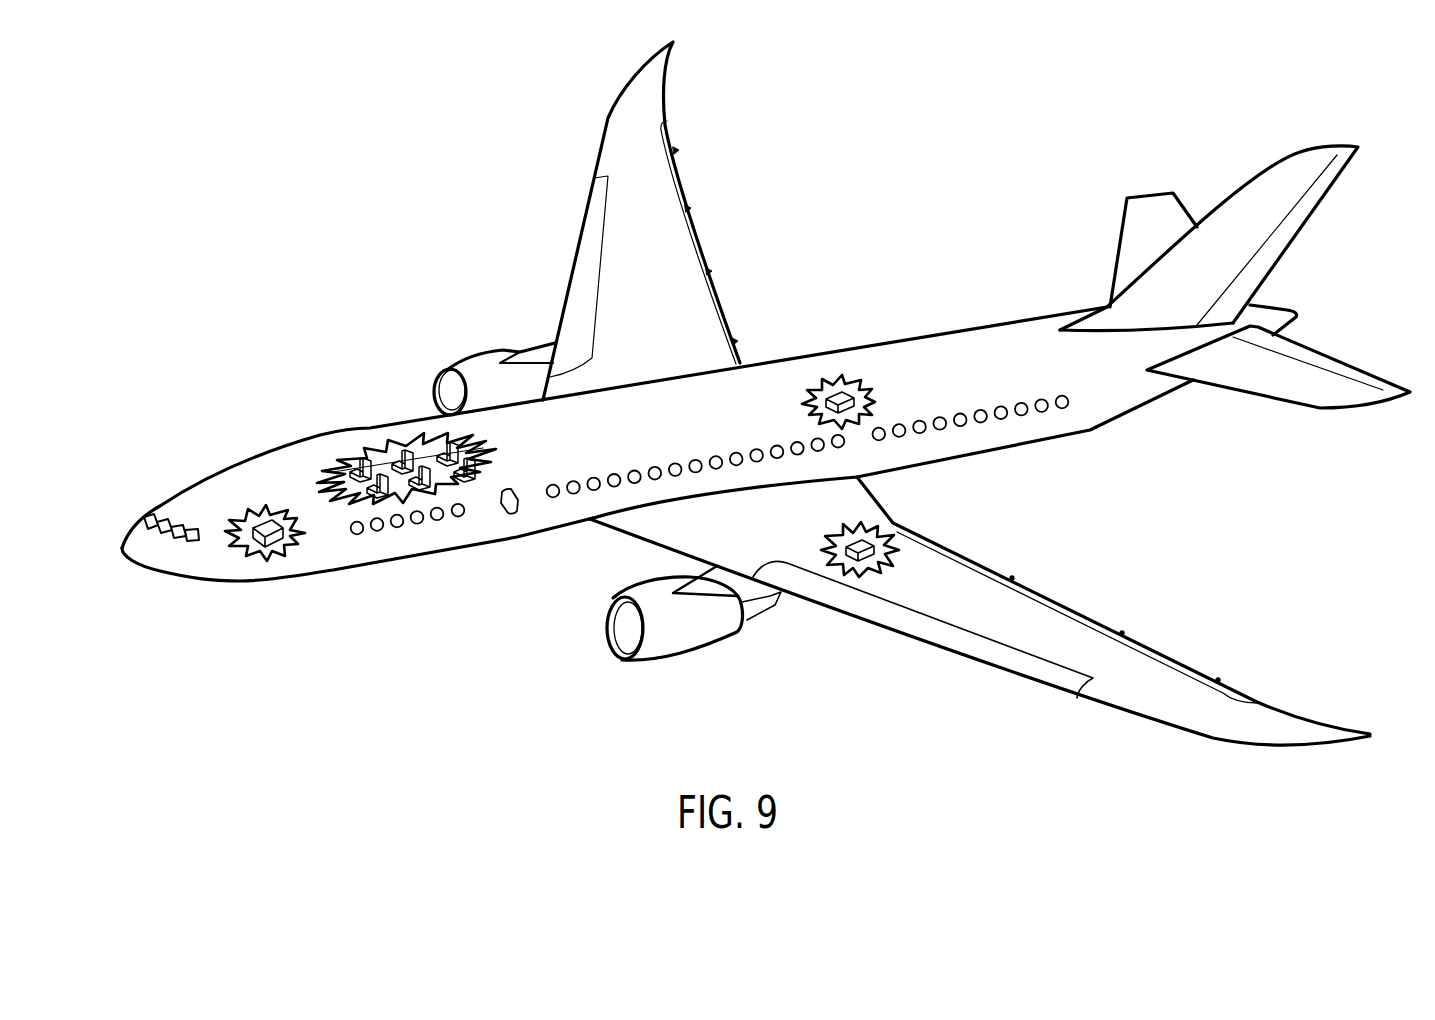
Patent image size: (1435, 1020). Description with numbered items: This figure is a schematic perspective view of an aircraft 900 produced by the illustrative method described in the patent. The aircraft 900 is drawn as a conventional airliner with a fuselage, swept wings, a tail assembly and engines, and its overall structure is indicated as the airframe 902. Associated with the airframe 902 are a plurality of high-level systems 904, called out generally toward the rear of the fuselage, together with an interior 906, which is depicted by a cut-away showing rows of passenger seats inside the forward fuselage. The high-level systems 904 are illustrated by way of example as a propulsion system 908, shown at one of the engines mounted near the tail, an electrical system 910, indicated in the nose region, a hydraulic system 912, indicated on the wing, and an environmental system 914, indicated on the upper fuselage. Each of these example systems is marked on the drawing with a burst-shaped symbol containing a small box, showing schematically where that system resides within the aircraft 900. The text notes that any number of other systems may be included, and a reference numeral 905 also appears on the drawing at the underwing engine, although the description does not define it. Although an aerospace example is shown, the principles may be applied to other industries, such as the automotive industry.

The aircraft 900 is at (290, 182).
The airframe 902 is at (393, 414).
The high-level systems 904 is at (963, 299).
The engine 905 is at (690, 634).
The interior 906 is at (357, 452).
The propulsion system 908 is at (475, 363).
The electrical system 910 is at (264, 507).
The hydraulic system 912 is at (870, 540).
The environmental system 914 is at (838, 393).